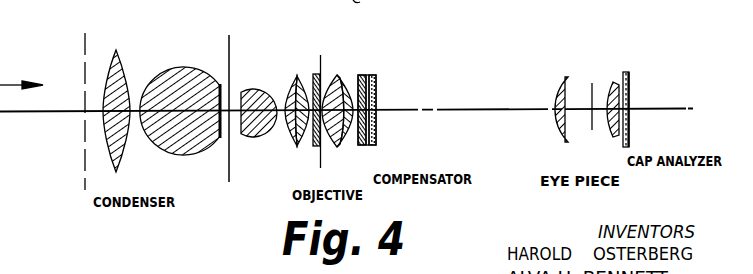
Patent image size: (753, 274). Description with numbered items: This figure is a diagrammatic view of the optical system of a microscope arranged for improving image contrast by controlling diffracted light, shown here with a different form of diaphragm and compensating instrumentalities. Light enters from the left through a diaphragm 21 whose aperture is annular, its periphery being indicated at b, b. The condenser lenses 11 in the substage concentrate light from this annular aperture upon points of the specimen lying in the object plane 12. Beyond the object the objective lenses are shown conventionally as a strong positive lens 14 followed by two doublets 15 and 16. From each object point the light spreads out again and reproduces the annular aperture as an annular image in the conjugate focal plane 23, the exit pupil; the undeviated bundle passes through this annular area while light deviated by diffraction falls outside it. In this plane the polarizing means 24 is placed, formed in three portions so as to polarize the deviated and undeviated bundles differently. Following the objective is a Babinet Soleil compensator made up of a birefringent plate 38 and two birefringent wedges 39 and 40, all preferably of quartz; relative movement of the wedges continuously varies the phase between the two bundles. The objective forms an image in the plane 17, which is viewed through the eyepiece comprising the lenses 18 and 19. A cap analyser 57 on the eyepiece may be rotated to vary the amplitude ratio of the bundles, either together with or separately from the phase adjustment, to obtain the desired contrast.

The diaphragm 21 is at (84, 52).
The annular aperture b is at (84, 80).
The condenser lenses 11 is at (167, 75).
The object plane 12 is at (230, 45).
The strong positive lens 14 is at (253, 91).
The doublet 15 is at (297, 76).
The polarizing means 24 is at (315, 146).
The conjugate focal plane 23 is at (321, 152).
The doublet 16 is at (337, 75).
The birefringent plate 38 is at (362, 75).
The birefringent wedge 39 is at (377, 102).
The birefringent wedge 40 is at (373, 76).
The eyepiece lens 18 is at (586, 45).
The image plane 17 is at (592, 128).
The eyepiece lens 19 is at (613, 82).
The cap analyser 57 is at (629, 72).